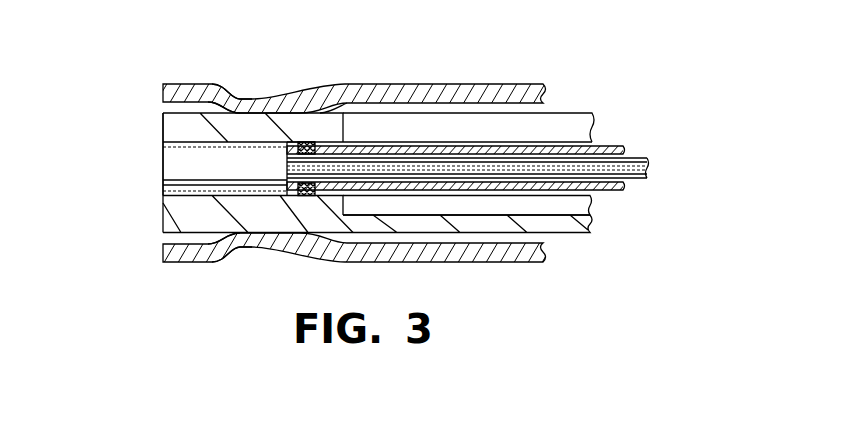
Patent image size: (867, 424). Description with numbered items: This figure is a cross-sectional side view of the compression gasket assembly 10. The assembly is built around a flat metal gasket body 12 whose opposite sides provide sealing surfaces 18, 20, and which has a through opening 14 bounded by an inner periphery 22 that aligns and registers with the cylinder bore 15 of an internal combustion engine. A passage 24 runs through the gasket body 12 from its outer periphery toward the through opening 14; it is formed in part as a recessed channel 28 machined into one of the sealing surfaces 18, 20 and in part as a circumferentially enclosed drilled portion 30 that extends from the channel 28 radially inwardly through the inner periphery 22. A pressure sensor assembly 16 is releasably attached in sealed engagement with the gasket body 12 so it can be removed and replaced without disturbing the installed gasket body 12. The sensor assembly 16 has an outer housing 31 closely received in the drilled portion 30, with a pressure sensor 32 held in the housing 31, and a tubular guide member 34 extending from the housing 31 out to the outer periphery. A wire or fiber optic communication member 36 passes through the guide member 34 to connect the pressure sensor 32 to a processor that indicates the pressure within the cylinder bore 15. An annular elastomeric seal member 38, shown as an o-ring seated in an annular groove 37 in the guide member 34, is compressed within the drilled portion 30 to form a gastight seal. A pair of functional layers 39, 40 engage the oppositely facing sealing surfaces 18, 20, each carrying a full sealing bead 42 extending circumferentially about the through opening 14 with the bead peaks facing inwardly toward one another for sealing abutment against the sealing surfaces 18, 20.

The compression gasket assembly 10 is at (665, 74).
The gasket body 12 is at (170, 125).
The through opening 14 is at (152, 221).
The cylinder bore 15 is at (98, 188).
The pressure sensor assembly 16 is at (560, 126).
The sealing surface 18 is at (347, 113).
The sealing surface 20 is at (563, 234).
The inner periphery 22 is at (162, 130).
The passage 24 is at (601, 212).
The channel 28 is at (600, 207).
The drilled portion 30 is at (162, 181).
The outer housing 31 is at (208, 150).
The pressure sensor 32 is at (162, 167).
The tubular guide member 34 is at (618, 146).
The communication member 36 is at (640, 159).
The annular groove 37 is at (306, 142).
The seal member 38 is at (296, 136).
The functional layer 39 is at (470, 84).
The functional layer 40 is at (470, 263).
The sealing bead 42 is at (257, 96).